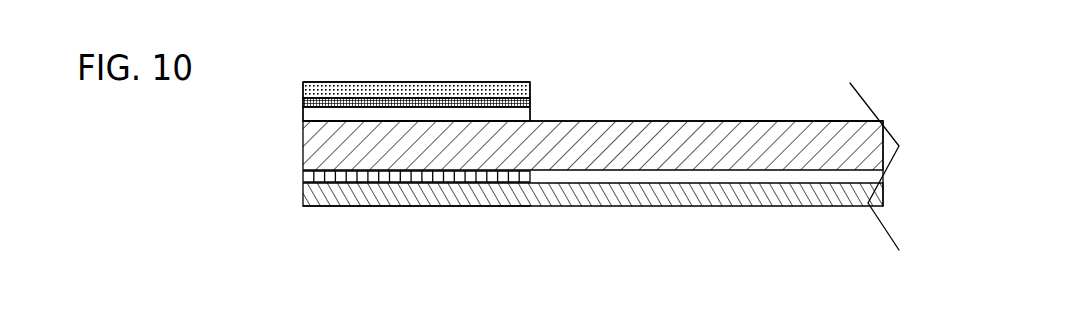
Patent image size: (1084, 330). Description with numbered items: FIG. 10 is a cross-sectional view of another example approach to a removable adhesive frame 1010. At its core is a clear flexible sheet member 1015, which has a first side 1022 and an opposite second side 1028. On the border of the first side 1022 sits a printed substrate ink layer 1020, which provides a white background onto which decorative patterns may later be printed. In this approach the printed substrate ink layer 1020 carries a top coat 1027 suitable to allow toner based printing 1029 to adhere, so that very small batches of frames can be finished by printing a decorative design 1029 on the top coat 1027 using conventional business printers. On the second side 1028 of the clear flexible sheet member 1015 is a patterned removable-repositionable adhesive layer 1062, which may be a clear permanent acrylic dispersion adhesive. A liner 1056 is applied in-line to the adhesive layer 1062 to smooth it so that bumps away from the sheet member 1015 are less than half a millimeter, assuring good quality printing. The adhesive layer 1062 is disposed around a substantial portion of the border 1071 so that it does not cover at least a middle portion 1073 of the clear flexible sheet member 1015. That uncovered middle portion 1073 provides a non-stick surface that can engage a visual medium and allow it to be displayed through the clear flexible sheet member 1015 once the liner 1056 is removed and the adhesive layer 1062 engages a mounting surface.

The removable adhesive frame 1010 is at (822, 45).
The clear flexible sheet member 1015 is at (303, 145).
The printed substrate ink layer 1020 is at (303, 114).
The first side 1022 is at (652, 48).
The top coat 1027 is at (418, 97).
The second side 1028 is at (424, 255).
The toner based printing 1029 is at (303, 89).
The liner 1056 is at (593, 206).
The patterned removable-repositionable adhesive layer 1062 is at (303, 176).
The border 1071 is at (404, 53).
The middle portion 1073 is at (784, 106).